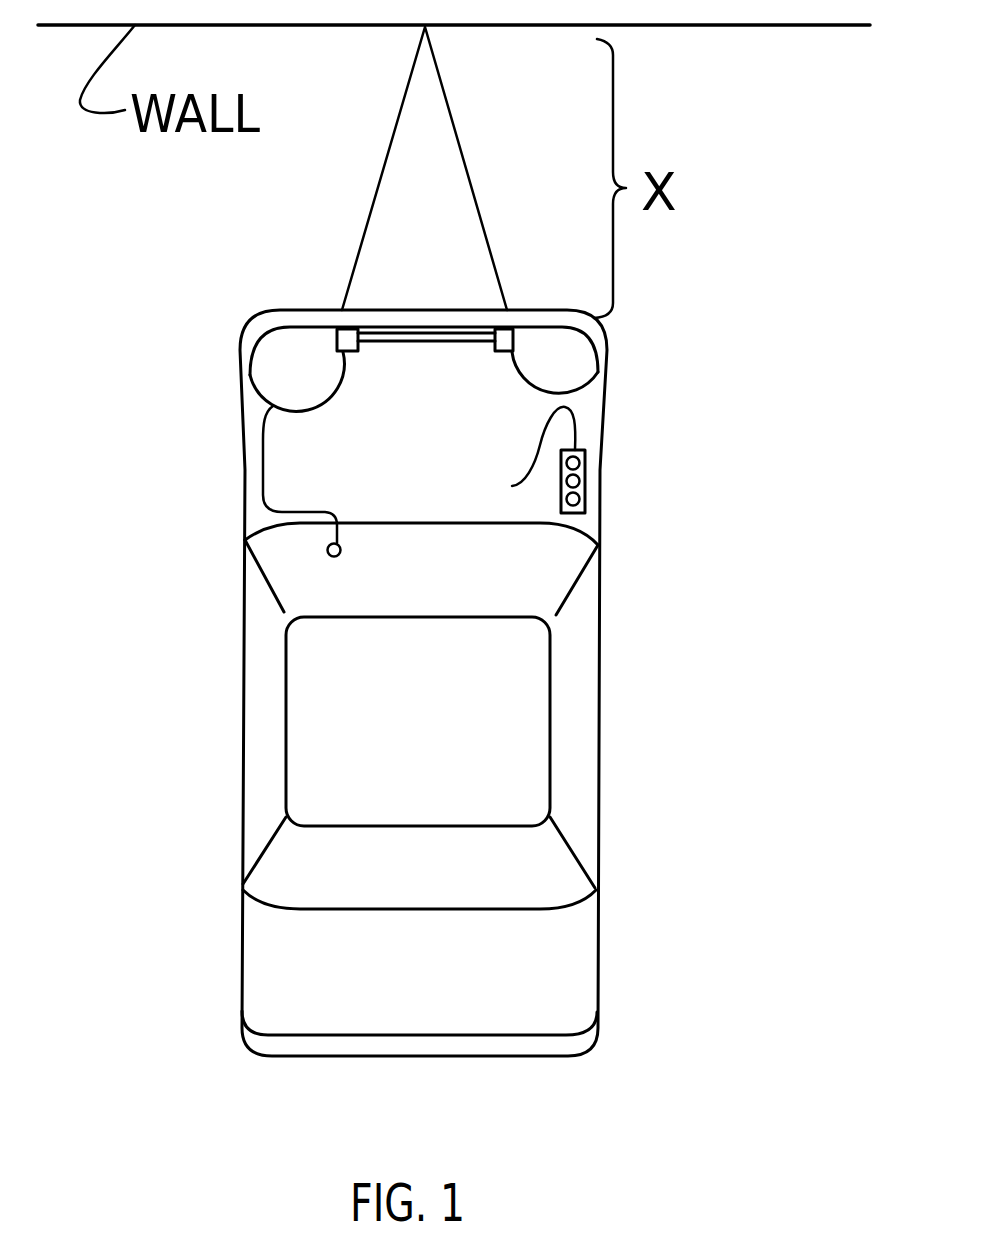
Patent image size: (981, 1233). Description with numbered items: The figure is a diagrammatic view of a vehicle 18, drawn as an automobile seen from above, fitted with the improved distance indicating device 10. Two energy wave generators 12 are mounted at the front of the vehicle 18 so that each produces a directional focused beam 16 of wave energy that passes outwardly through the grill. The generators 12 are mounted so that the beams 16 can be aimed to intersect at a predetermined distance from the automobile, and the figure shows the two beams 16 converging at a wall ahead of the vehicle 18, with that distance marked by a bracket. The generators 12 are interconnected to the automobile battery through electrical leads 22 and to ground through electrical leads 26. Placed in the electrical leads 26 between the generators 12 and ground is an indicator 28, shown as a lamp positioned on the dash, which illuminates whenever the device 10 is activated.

The distance indicating device 10 is at (657, 421).
The energy wave generators 12 is at (347, 350).
The focused beam 16 is at (378, 181).
The vehicle 18 is at (592, 628).
The electrical leads 22 is at (420, 342).
The electrical leads 26 is at (273, 406).
The indicator 28 is at (328, 557).